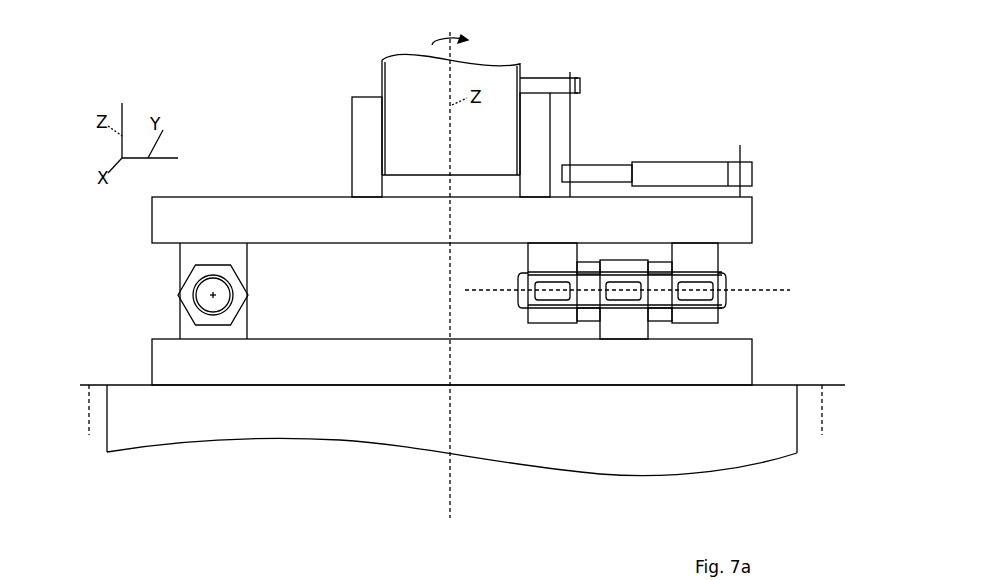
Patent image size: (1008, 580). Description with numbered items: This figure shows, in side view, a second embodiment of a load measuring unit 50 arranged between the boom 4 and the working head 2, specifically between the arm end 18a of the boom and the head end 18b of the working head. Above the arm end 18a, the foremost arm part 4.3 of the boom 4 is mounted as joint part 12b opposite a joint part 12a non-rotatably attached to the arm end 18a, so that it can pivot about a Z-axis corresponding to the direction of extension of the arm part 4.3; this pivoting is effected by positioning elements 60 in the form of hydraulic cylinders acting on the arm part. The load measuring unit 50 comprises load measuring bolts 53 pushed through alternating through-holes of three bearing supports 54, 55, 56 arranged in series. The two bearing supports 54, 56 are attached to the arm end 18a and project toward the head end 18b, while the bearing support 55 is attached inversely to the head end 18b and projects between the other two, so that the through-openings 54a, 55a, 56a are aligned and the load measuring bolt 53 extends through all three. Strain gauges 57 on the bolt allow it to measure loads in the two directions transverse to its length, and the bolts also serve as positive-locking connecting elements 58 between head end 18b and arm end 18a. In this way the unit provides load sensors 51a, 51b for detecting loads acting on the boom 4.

The working head 2 is at (742, 438).
The boom 4 is at (412, 93).
The foremost arm part 4.3 is at (413, 93).
The joint part 12a is at (360, 122).
The joint part 12b is at (580, 85).
The arm end 18a is at (180, 223).
The head end 18b is at (170, 363).
The load measuring unit 50 is at (377, 318).
The load sensor 51a is at (664, 257).
The load sensor 51b is at (252, 287).
The load measuring bolt 53 is at (528, 276).
The bearing support 54 is at (553, 232).
The through-opening 54a is at (528, 310).
The bearing support 55 is at (749, 301).
The through-opening 55a is at (603, 262).
The bearing support 56 is at (771, 293).
The through-opening 56a is at (718, 307).
The strain gauge 57 is at (727, 298).
The positive-locking connecting element 58 is at (195, 288).
The positioning element 60 is at (660, 175).